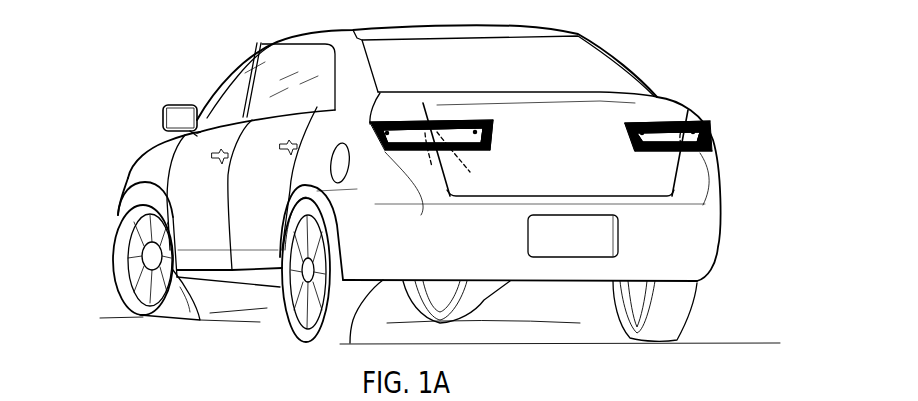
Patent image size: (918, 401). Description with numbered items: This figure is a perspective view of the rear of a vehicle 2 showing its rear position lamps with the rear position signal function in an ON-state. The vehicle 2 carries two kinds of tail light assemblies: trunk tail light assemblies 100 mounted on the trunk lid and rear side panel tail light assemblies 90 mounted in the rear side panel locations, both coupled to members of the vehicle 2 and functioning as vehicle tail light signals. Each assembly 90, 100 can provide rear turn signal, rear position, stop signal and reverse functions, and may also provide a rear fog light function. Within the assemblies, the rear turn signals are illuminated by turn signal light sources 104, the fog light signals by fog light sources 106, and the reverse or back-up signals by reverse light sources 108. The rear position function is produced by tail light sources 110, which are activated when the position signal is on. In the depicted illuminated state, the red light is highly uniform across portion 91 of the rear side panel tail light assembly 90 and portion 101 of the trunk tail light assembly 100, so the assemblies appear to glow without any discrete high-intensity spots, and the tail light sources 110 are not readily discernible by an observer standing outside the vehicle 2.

The vehicle 2 is at (101, 76).
The rear side panel tail light assembly 90 is at (374, 158).
The portion of tail light assembly 90 91 is at (422, 212).
The trunk tail light assembly 100 is at (452, 110).
The portion of tail light assembly 100 101 is at (487, 148).
The turn signal light source 104 is at (393, 129).
The fog light source 106 is at (624, 126).
The reverse light source 108 is at (643, 123).
The tail light source 110 is at (457, 182).